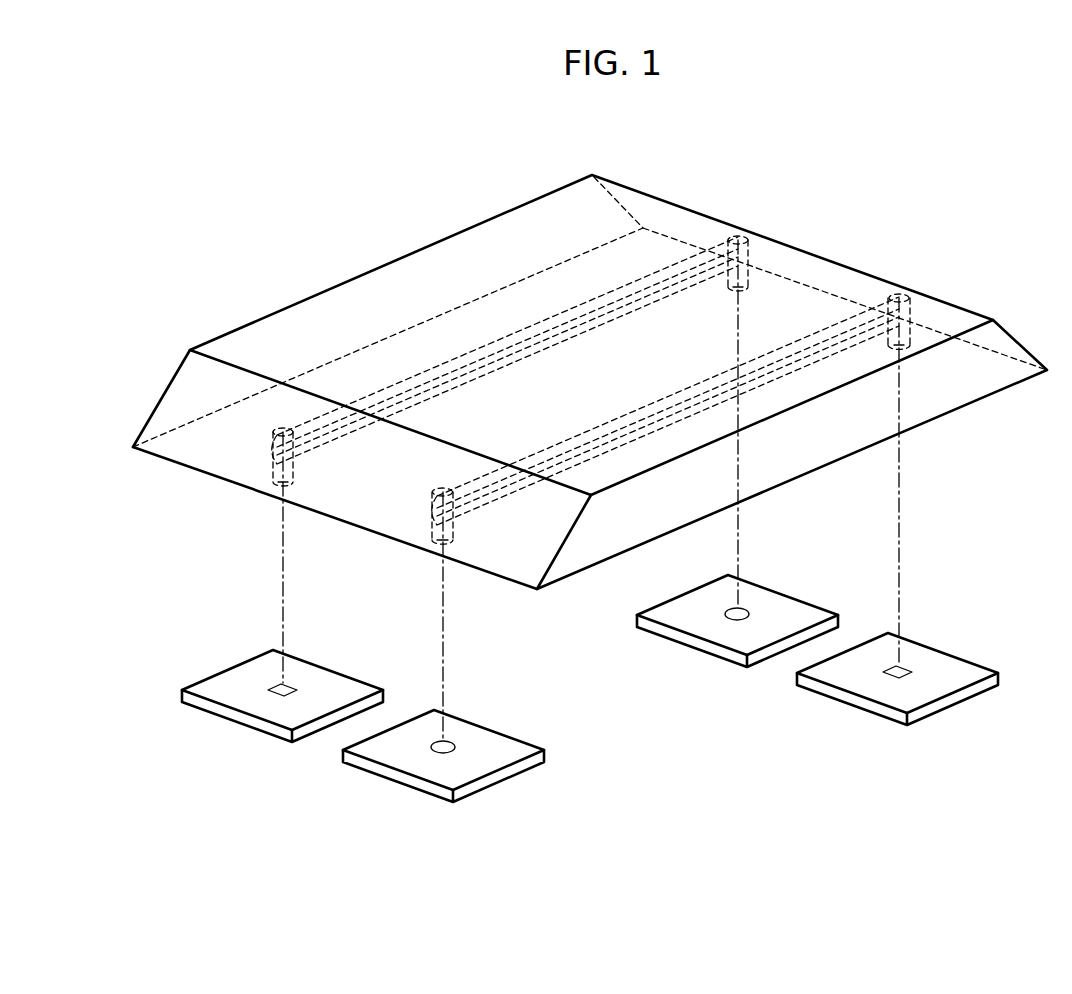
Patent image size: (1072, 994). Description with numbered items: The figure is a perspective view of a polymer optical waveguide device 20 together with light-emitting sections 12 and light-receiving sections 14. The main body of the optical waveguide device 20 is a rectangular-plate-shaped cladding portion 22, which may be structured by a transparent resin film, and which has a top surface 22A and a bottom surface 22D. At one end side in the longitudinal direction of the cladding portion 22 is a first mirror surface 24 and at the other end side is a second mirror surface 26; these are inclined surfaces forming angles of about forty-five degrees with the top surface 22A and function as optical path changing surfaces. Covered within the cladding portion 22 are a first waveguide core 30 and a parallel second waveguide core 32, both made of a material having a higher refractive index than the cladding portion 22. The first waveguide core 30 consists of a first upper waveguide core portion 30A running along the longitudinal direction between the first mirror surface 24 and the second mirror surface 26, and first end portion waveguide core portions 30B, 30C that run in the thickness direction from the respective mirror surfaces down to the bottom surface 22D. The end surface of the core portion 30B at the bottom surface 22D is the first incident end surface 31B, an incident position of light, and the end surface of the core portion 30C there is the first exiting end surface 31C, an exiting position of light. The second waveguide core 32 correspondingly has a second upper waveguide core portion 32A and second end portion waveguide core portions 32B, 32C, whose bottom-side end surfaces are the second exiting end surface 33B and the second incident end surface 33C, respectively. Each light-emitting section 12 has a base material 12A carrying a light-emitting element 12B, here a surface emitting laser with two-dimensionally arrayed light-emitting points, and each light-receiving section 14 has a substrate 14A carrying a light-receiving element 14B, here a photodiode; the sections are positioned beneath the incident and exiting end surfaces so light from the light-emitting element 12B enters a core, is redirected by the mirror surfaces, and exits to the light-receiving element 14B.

The optical waveguide device 20 is at (252, 188).
The cladding portion 22 is at (477, 222).
The top surface 22A is at (307, 318).
The bottom surface 22D is at (197, 447).
The first mirror surface 24 is at (177, 403).
The second mirror surface 26 is at (828, 278).
The first waveguide core 30 is at (568, 306).
The first upper waveguide core portion 30A is at (413, 377).
The first end portion waveguide core portion 30B is at (273, 457).
The first end portion waveguide core portion 30C is at (748, 268).
The first incident end surface 31B is at (279, 480).
The first exiting end surface 31C is at (733, 289).
The second waveguide core 32 is at (654, 398).
The second upper waveguide core portion 32A is at (578, 430).
The second end portion waveguide core portion 32B is at (457, 522).
The second end portion waveguide core portion 32C is at (908, 324).
The second exiting end surface 33B is at (436, 540).
The second incident end surface 33C is at (905, 347).
The light-emitting section 12 is at (215, 670).
The base material 12A is at (258, 735).
The light-emitting element 12B is at (268, 690).
The light-receiving section 14 is at (513, 730).
The substrate 14A is at (498, 782).
The light-receiving element 14B is at (433, 747).